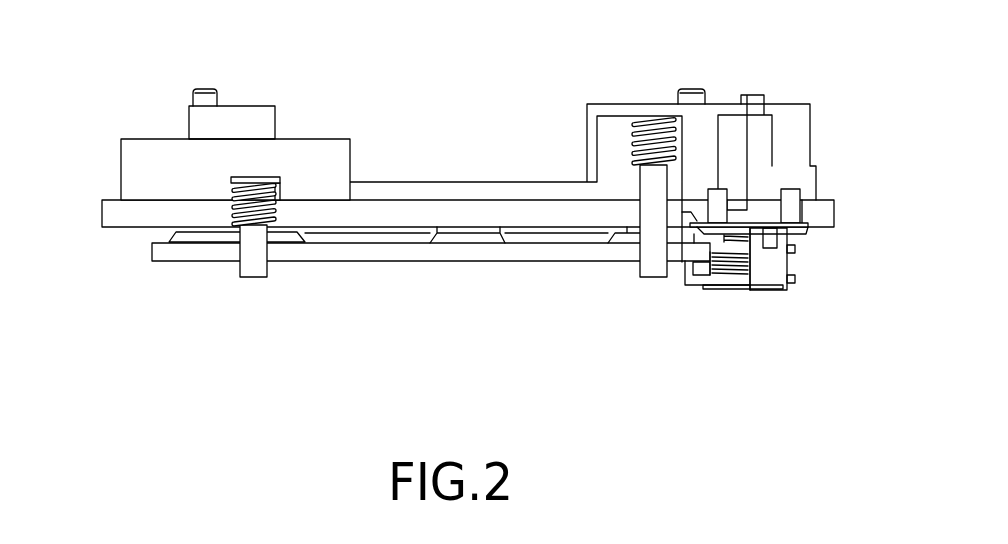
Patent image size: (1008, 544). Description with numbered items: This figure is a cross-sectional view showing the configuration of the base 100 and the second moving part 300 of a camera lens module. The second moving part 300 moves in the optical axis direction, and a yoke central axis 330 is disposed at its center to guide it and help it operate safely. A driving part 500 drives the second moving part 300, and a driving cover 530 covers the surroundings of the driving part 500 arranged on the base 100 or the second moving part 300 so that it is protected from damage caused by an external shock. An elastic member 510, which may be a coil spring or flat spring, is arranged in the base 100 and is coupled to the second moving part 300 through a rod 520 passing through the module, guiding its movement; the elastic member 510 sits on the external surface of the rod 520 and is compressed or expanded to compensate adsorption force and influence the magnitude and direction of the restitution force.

The base 100 is at (148, 150).
The second moving part 300 is at (362, 252).
The yoke central axis 330 is at (470, 233).
The driving part 500 is at (728, 277).
The elastic member 510 is at (633, 121).
The rod 520 is at (655, 262).
The driving cover 530 is at (773, 273).